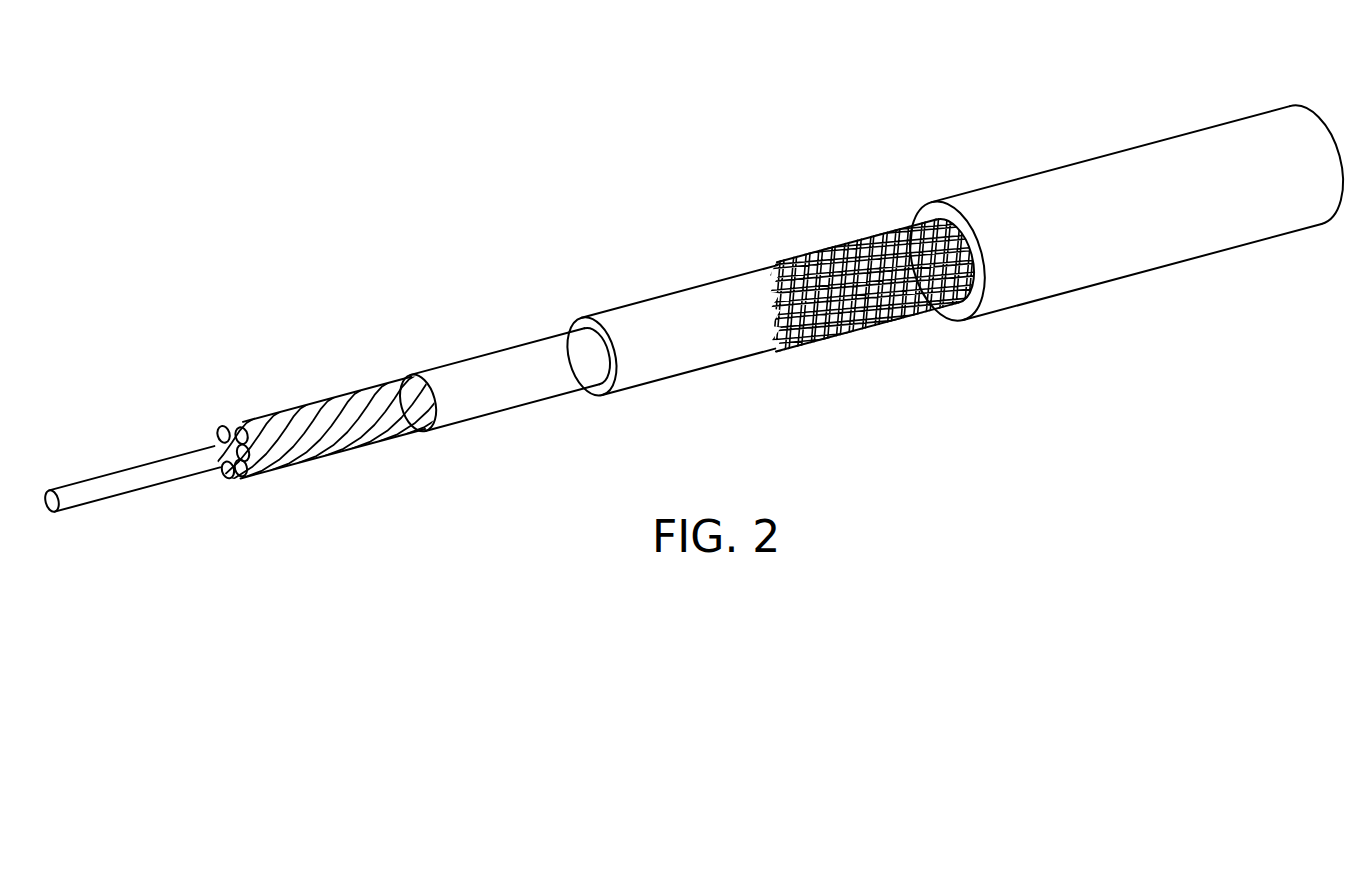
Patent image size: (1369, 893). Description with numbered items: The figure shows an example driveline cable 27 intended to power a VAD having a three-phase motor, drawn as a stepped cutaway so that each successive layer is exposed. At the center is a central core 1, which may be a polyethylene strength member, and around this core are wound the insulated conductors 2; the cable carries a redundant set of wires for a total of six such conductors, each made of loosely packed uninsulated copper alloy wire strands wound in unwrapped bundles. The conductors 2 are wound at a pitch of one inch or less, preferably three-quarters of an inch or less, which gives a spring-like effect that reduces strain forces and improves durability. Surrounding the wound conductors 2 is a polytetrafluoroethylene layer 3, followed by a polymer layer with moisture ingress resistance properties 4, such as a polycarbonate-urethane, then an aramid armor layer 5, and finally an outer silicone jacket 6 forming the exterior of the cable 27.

The central core 1 is at (147, 463).
The insulated conductors 2 is at (288, 408).
The polytetrafluoroethylene (PTFE) layer 3 is at (481, 355).
The polymer layer with moisture ingress resistance properties 4 is at (690, 288).
The aramid armor layer 5 is at (852, 242).
The outer silicone jacket 6 is at (1062, 168).
The driveline cable 27 is at (903, 378).